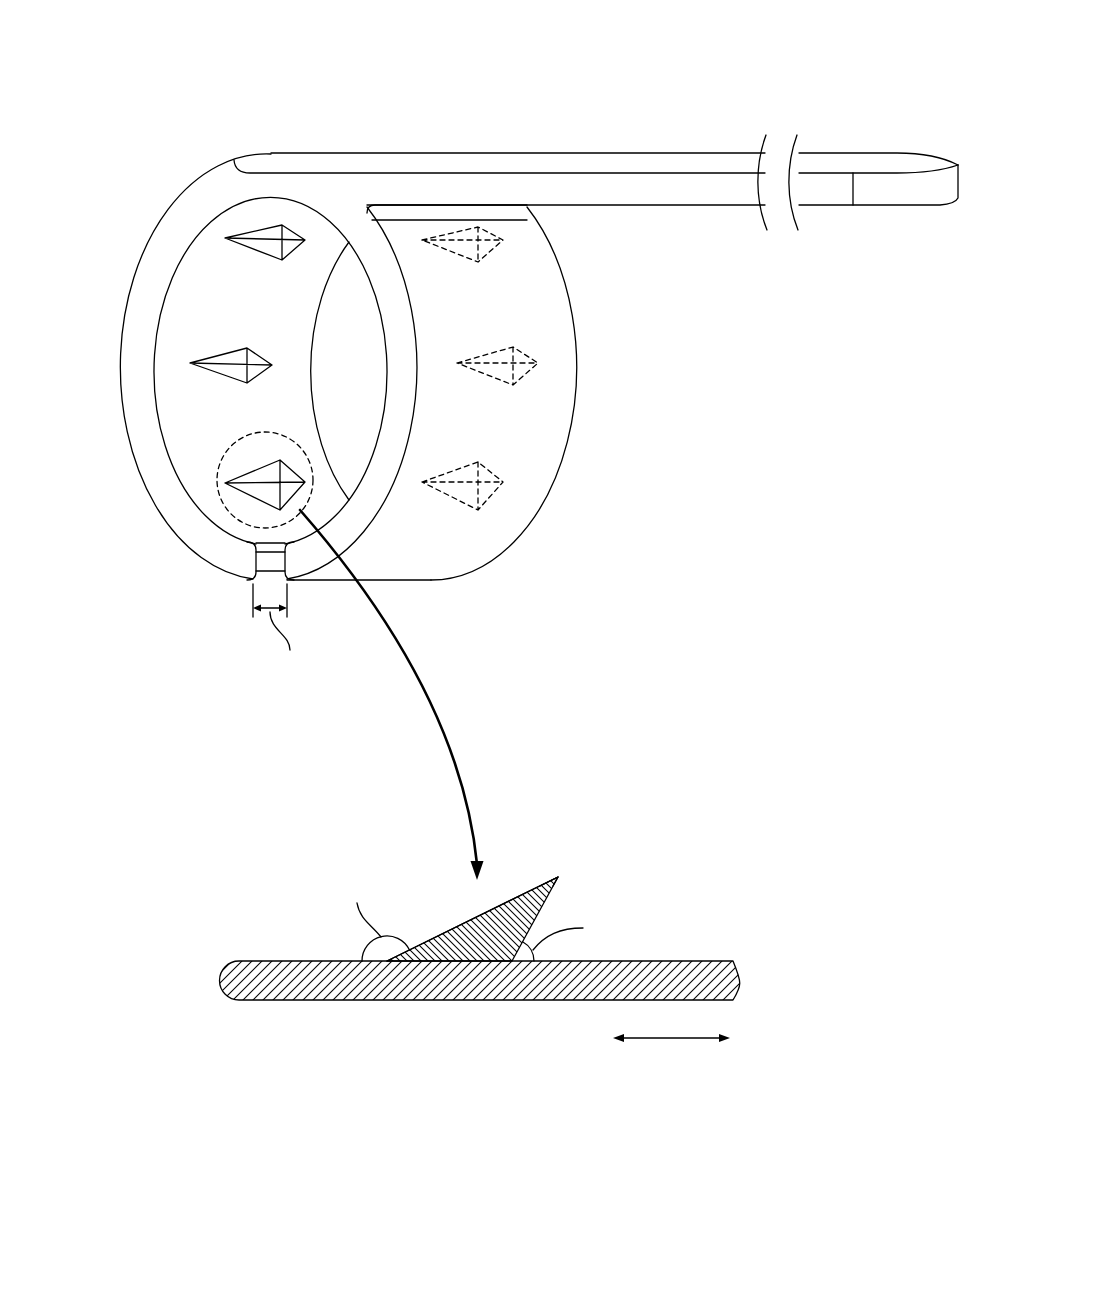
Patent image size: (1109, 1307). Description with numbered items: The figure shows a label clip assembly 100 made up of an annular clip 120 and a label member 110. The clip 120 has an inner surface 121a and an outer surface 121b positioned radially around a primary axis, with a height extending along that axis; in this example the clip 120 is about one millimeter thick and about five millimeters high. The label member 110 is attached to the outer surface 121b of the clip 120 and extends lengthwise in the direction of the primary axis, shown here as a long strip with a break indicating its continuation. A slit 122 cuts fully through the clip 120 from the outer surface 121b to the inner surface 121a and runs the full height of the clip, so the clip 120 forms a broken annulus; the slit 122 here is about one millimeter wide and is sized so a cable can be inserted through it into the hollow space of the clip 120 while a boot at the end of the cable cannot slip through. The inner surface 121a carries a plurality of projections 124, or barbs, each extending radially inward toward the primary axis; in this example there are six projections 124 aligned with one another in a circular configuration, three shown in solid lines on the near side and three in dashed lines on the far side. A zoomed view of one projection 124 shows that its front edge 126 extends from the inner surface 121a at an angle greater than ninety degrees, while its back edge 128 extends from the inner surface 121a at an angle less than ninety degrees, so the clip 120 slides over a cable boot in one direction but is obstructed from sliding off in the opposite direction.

The assembly 100 is at (842, 38).
The label member 110 is at (877, 185).
The annular clip 120 is at (127, 316).
The inner surface 121a is at (203, 246).
The outer surface 121b is at (527, 445).
The slit 122 is at (250, 579).
The projection 124 is at (228, 352).
The front edge 126 is at (442, 928).
The back edge 128 is at (550, 899).